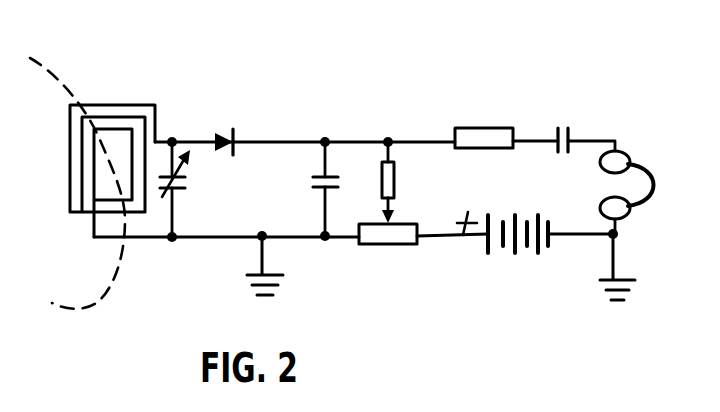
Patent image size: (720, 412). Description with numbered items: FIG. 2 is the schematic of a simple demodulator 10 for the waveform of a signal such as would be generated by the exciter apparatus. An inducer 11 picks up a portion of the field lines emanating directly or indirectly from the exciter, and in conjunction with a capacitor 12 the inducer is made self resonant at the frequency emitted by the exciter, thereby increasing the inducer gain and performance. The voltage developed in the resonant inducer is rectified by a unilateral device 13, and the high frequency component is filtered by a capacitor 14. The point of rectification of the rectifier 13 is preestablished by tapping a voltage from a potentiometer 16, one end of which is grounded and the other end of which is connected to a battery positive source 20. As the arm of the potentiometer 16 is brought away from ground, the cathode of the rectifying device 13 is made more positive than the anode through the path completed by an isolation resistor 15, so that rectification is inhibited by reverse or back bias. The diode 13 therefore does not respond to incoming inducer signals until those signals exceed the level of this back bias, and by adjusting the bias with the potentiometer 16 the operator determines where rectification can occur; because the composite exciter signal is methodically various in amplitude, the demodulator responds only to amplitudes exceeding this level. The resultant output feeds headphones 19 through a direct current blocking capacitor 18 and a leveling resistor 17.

The receiver circuit 10 is at (328, 92).
The inducer 11 is at (112, 96).
The capacitor 12 is at (188, 196).
The unilateral device 13 is at (250, 131).
The capacitor 14 is at (303, 195).
The isolation resistor 15 is at (400, 187).
The potentiometer 16 is at (400, 246).
The leveling resistor 17 is at (479, 123).
The direct current blocking capacitor 18 is at (569, 121).
The headphones 19 is at (658, 186).
The battery positive source 20 is at (538, 258).